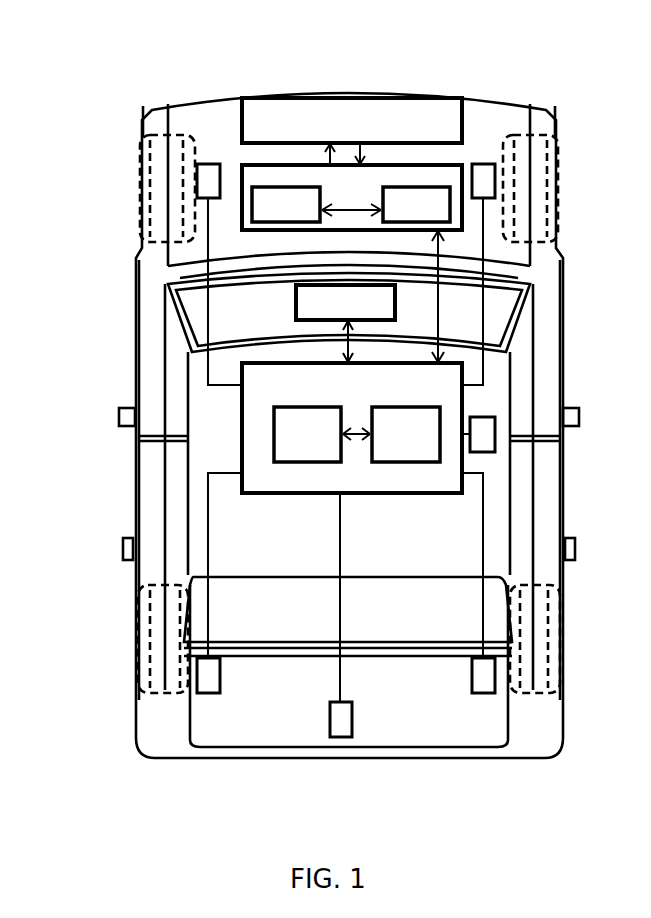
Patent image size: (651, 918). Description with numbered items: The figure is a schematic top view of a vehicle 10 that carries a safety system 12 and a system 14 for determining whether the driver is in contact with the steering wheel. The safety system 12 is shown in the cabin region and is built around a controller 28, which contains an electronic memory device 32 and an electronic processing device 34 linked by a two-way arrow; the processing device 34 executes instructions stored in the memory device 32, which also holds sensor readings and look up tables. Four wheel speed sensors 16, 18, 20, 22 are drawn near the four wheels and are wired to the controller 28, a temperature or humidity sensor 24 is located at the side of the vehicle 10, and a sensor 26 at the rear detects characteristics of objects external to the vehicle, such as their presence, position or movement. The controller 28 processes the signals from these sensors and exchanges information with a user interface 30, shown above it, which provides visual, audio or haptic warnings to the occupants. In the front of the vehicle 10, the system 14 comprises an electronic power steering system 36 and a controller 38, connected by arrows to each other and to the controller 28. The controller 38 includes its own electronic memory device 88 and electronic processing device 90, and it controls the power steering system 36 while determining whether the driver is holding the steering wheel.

The vehicle 10 is at (230, 538).
The safety system 12 is at (215, 420).
The system for determining whether a driver is in contact with a steering wheel 14 is at (230, 104).
The wheel speed sensor 16 is at (210, 181).
The wheel speed sensor 18 is at (484, 181).
The wheel speed sensor 20 is at (210, 673).
The wheel speed sensor 22 is at (489, 682).
The temperature or humidity sensor 24 is at (484, 437).
The sensor 26 is at (338, 724).
The controller 28 is at (352, 428).
The user interface 30 is at (345, 302).
The electronic memory device 32 is at (307, 434).
The electronic processing device 34 is at (406, 434).
The electronic power steering system 36 is at (352, 120).
The controller 38 is at (352, 197).
The electronic memory device 88 is at (286, 205).
The electronic processing device 90 is at (416, 205).